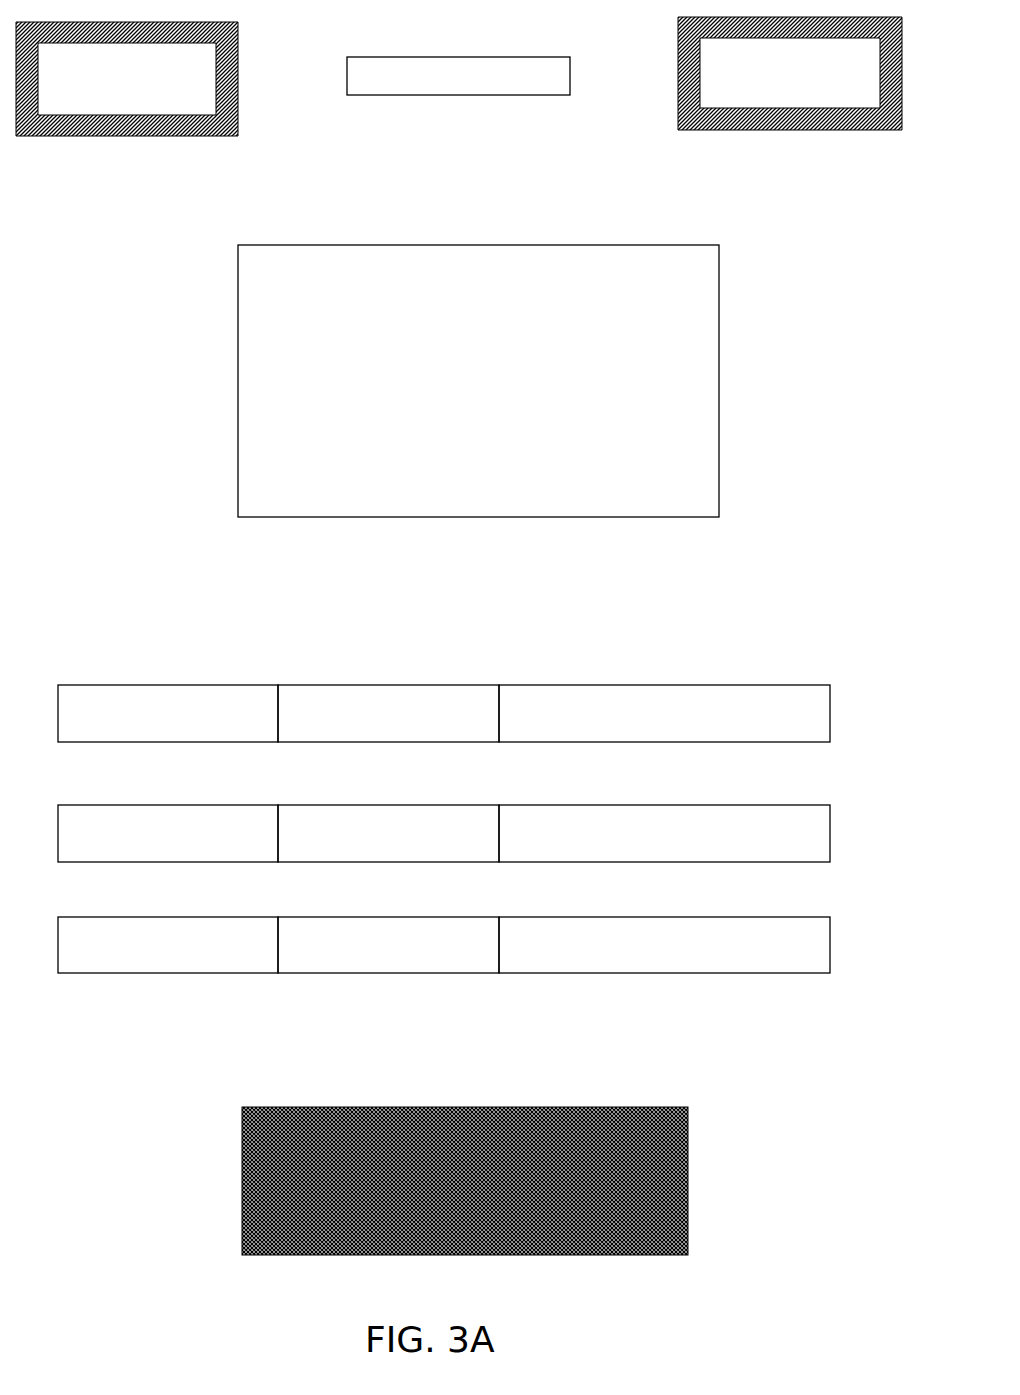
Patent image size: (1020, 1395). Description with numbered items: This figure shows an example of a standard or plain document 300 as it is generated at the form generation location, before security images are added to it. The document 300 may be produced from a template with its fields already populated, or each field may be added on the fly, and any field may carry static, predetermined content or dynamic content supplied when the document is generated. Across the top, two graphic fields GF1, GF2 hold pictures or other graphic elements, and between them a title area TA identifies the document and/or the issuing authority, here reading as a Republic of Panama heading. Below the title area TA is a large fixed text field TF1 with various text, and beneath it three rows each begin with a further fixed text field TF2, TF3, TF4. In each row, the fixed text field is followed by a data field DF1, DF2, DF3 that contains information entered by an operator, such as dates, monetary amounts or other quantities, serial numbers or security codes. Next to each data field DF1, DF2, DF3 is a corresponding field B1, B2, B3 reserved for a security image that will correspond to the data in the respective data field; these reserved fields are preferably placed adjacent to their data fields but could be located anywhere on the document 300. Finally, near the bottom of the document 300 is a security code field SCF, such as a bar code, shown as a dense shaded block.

The document 300 is at (115, 1211).
The graphic field GF1 is at (127, 103).
The graphic field GF2 is at (790, 101).
The title area TA is at (458, 98).
The fixed text field TF1 is at (478, 381).
The fixed text field TF2 is at (168, 713).
The fixed text field TF3 is at (168, 833).
The fixed text field TF4 is at (168, 945).
The data field DF1 is at (388, 713).
The data field DF2 is at (388, 833).
The data field DF3 is at (388, 945).
The field reserved for security image B1 is at (664, 713).
The field reserved for security image B2 is at (664, 833).
The field reserved for security image B3 is at (664, 945).
The security code field SCF is at (506, 1171).